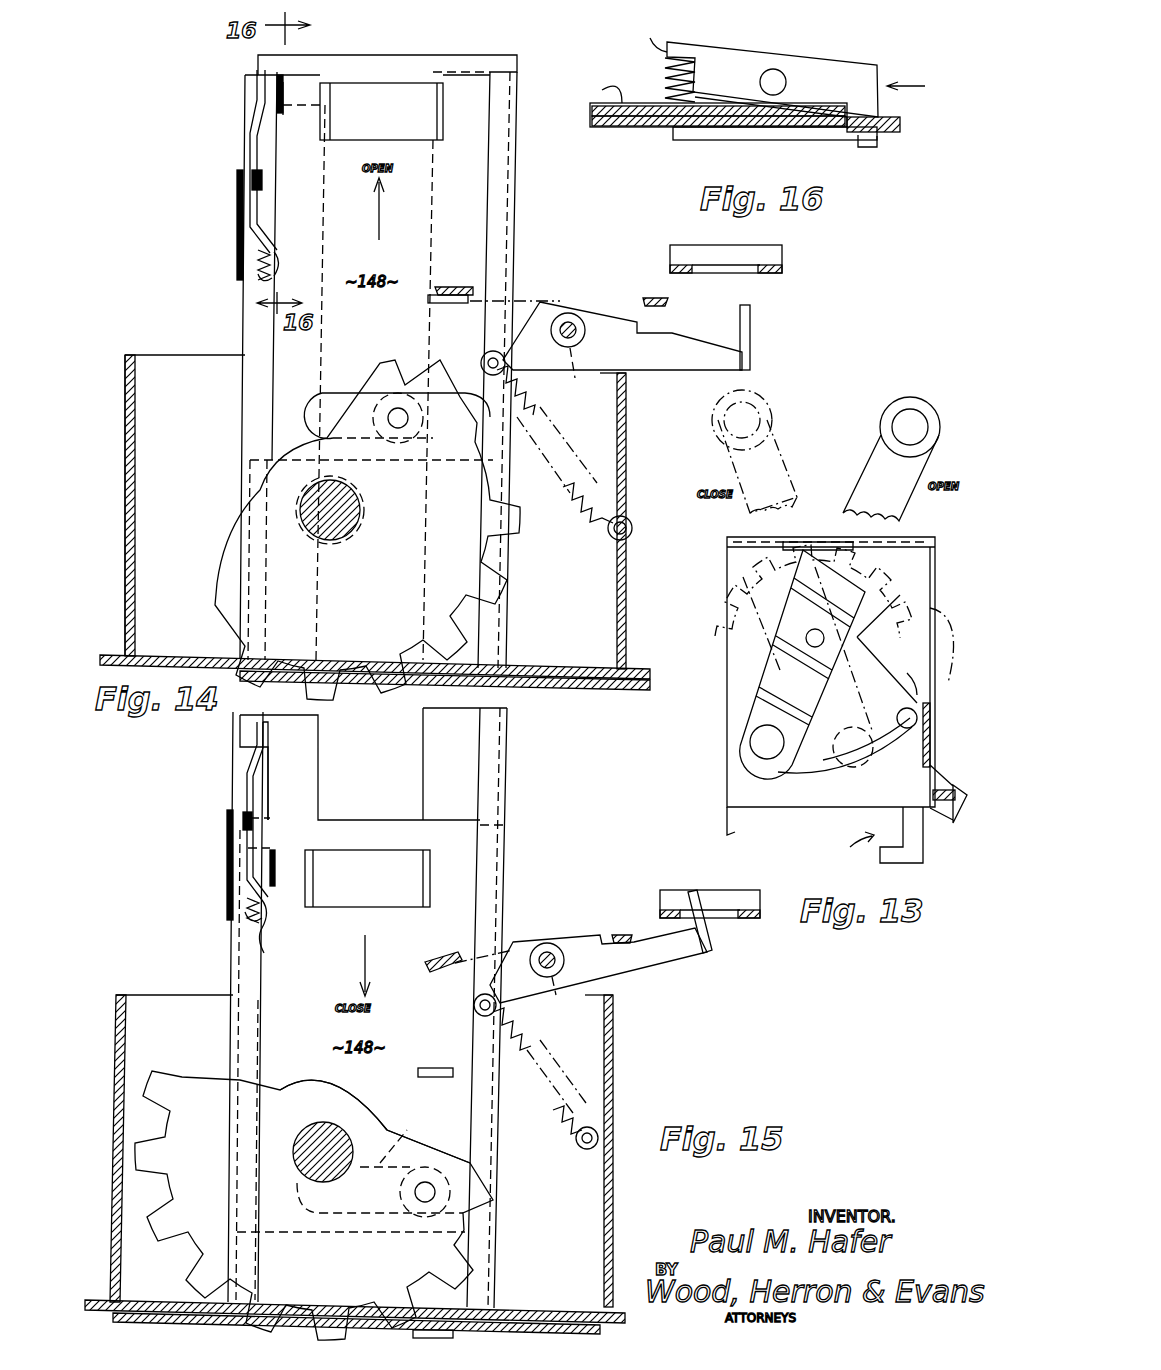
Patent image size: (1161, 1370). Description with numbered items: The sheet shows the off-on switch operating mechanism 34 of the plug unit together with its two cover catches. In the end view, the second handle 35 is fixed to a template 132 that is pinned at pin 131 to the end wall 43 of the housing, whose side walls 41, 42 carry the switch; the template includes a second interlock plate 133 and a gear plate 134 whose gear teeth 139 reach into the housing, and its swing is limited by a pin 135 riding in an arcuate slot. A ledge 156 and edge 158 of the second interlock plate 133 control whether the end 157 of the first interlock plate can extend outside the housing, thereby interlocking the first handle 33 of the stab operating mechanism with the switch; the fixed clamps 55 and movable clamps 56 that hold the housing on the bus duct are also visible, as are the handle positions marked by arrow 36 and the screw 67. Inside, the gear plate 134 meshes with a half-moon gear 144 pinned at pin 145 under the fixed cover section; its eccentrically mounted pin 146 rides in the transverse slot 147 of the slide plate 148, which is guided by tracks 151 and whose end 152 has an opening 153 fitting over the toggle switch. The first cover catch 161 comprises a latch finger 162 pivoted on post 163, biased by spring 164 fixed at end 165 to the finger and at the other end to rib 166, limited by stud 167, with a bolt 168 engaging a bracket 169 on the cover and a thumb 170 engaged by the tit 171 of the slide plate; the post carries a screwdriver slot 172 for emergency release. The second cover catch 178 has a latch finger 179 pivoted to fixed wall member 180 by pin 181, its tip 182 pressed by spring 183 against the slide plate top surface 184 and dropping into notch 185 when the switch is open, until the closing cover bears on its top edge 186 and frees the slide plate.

In FIG. 13, the first handle 33 is at (950, 810).
In FIG. 14, the off-on switch operating mechanism 34 is at (197, 385).
In FIG. 13, the off-on switch operating mechanism 34 is at (740, 570).
In FIG. 15, the off-on switch operating mechanism 34 is at (555, 1241).
In FIG. 13, the second handle 35 is at (882, 440).
In FIG. 13, the handle path 36 is at (856, 847).
In FIG. 13, the side wall 41 is at (727, 705).
In FIG. 13, the side wall 42 is at (935, 578).
In FIG. 13, the end wall 43 is at (735, 773).
In FIG. 13, the fixed clamps 55 is at (727, 834).
In FIG. 13, the movable clamps 56 is at (910, 862).
In FIG. 13, the screw 67 is at (934, 787).
In FIG. 13, the pin 131 is at (806, 638).
In FIG. 13, the template 132 is at (866, 656).
In FIG. 13, the second interlock plate 133 is at (875, 729).
In FIG. 14, the gear plate 134 is at (385, 690).
In FIG. 13, the gear plate 134 is at (882, 575).
In FIG. 15, the gear plate 134 is at (455, 1335).
In FIG. 13, the pin 135 is at (917, 716).
In FIG. 14, the gear teeth 139 is at (535, 690).
In FIG. 13, the gear teeth 139 is at (880, 578).
In FIG. 15, the gear teeth 139 is at (185, 1303).
In FIG. 14, the half-moon gear 144 is at (367, 530).
In FIG. 13, the half-moon gear 144 is at (800, 538).
In FIG. 15, the half-moon gear 144 is at (314, 1205).
In FIG. 14, the pin 145 is at (358, 515).
In FIG. 15, the pin 145 is at (323, 1121).
In FIG. 14, the eccentrically mounted pin 146 is at (395, 372).
In FIG. 15, the eccentrically mounted pin 146 is at (405, 1190).
In FIG. 14, the transverse slot 147 is at (338, 394).
In FIG. 15, the transverse slot 147 is at (408, 1140).
In FIG. 16, the slide plate 148 is at (640, 128).
In FIG. 14, the tracks 151 is at (243, 500).
In FIG. 16, the tracks 151 is at (593, 128).
In FIG. 15, the tracks 151 is at (510, 800).
In FIG. 14, the end 152 is at (408, 56).
In FIG. 15, the end 152 is at (347, 830).
In FIG. 14, the opening 153 is at (405, 80).
In FIG. 15, the opening 153 is at (393, 850).
In FIG. 13, the ledge 156 is at (845, 756).
In FIG. 13, the end 157 is at (930, 733).
In FIG. 13, the edge 158 is at (923, 651).
In FIG. 14, the first cover catch 161 is at (663, 336).
In FIG. 15, the first cover catch 161 is at (648, 972).
In FIG. 14, the latch finger 162 is at (622, 336).
In FIG. 15, the latch finger 162 is at (598, 965).
In FIG. 14, the post 163 is at (572, 322).
In FIG. 15, the post 163 is at (553, 950).
In FIG. 14, the spring 164 is at (578, 505).
In FIG. 15, the spring 164 is at (568, 1148).
In FIG. 14, the end 165 is at (486, 358).
In FIG. 15, the end 165 is at (476, 1005).
In FIG. 14, the rib 166 is at (632, 530).
In FIG. 15, the rib 166 is at (600, 1150).
In FIG. 14, the stud 167 is at (658, 298).
In FIG. 15, the stud 167 is at (625, 935).
In FIG. 14, the bolt 168 is at (750, 315).
In FIG. 15, the bolt 168 is at (712, 932).
In FIG. 14, the bracket 169 is at (783, 270).
In FIG. 15, the bracket 169 is at (752, 885).
In FIG. 14, the thumb 170 is at (450, 286).
In FIG. 15, the thumb 170 is at (440, 960).
In FIG. 14, the tit 171 is at (432, 303).
In FIG. 15, the tit 171 is at (446, 1068).
In FIG. 14, the screwdriver slot 172 is at (584, 377).
In FIG. 15, the screwdriver slot 172 is at (556, 995).
In FIG. 14, the second cover catch 178 is at (236, 206).
In FIG. 16, the second cover catch 178 is at (923, 86).
In FIG. 15, the second cover catch 178 is at (213, 848).
In FIG. 14, the latch finger 179 is at (268, 158).
In FIG. 16, the latch finger 179 is at (833, 57).
In FIG. 15, the latch finger 179 is at (247, 800).
In FIG. 14, the fixed wall member 180 is at (237, 150).
In FIG. 16, the fixed wall member 180 is at (799, 79).
In FIG. 15, the fixed wall member 180 is at (227, 893).
In FIG. 14, the pin 181 is at (245, 178).
In FIG. 16, the pin 181 is at (786, 90).
In FIG. 15, the pin 181 is at (233, 822).
In FIG. 14, the tip 182 is at (287, 86).
In FIG. 16, the tip 182 is at (858, 140).
In FIG. 15, the tip 182 is at (263, 723).
In FIG. 14, the spring 183 is at (276, 272).
In FIG. 16, the spring 183 is at (667, 68).
In FIG. 15, the spring 183 is at (268, 915).
In FIG. 16, the top surface 184 is at (598, 90).
In FIG. 14, the notch 185 is at (282, 78).
In FIG. 16, the notch 185 is at (862, 123).
In FIG. 15, the notch 185 is at (272, 853).
In FIG. 14, the top edge 186 is at (275, 252).
In FIG. 16, the top edge 186 is at (668, 42).
In FIG. 15, the top edge 186 is at (265, 950).